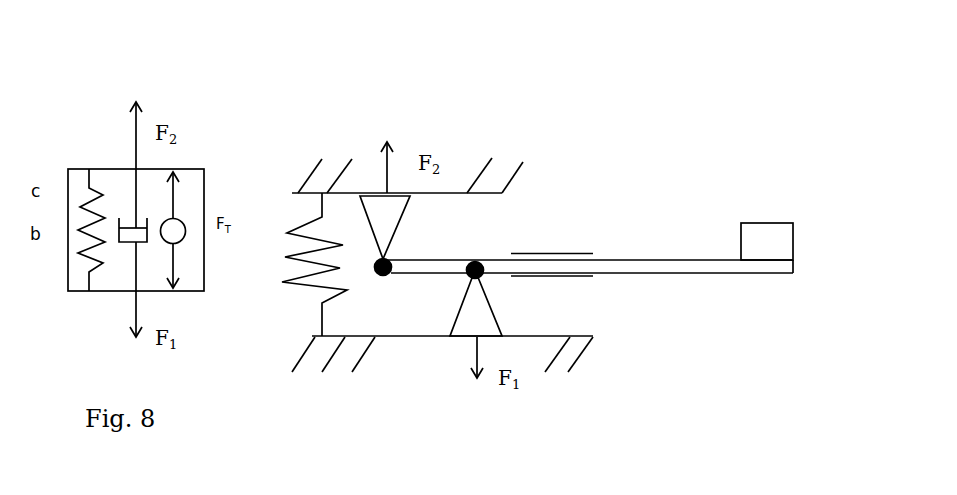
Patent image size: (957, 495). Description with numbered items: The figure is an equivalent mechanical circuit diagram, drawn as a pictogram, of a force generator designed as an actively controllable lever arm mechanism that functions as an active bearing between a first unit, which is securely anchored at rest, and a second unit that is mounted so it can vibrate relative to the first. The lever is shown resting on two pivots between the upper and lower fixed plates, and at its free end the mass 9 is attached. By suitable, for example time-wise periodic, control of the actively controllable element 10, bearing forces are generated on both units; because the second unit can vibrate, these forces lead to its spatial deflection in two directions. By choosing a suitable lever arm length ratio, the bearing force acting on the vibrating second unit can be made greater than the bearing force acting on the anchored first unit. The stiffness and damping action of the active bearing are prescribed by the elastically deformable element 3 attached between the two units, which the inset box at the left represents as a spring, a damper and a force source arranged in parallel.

The elastically deformable element 3 is at (294, 220).
The mass 9 is at (753, 223).
The actively controllable element 10 is at (560, 251).